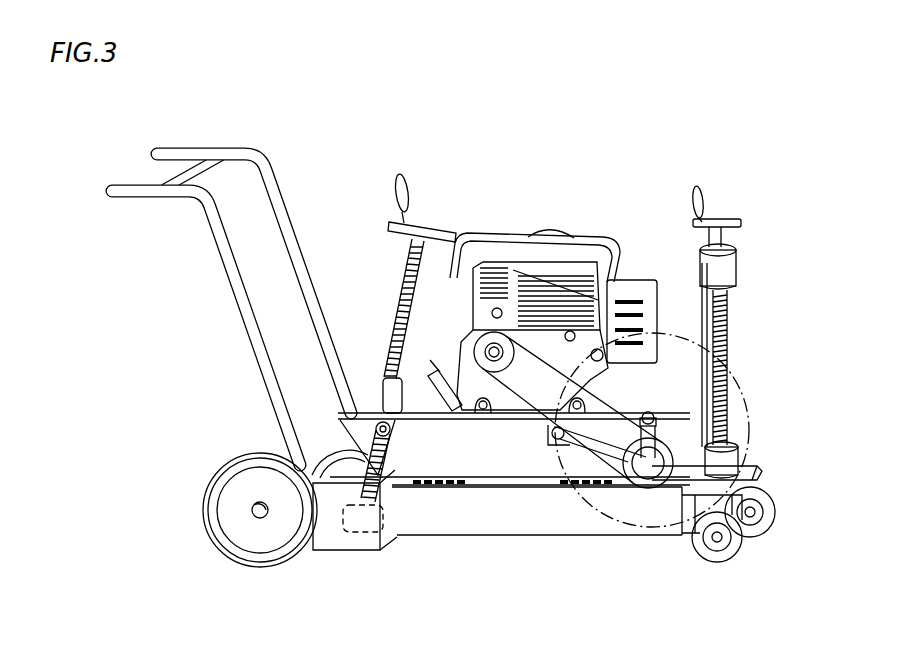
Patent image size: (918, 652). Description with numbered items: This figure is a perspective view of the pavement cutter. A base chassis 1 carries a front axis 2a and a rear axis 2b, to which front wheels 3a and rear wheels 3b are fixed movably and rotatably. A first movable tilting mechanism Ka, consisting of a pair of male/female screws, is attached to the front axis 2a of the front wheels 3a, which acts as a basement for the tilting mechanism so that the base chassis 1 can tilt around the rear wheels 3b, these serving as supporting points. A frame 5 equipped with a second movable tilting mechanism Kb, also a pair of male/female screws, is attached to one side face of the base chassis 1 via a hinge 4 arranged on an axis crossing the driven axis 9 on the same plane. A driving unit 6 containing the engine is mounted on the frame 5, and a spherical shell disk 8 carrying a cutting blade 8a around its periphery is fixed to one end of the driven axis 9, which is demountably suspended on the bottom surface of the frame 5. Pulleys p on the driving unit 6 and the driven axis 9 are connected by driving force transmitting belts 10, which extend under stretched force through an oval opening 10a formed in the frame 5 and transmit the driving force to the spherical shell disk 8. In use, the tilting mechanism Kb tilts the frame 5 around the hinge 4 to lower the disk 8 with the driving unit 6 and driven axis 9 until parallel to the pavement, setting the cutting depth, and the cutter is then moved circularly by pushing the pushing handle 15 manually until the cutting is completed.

The base chassis 1 is at (660, 532).
The front axis 2a is at (757, 523).
The rear axis 2b is at (256, 508).
The front wheels 3a is at (768, 496).
The rear wheels 3b is at (334, 445).
The hinge 4 is at (445, 484).
The frame 5 is at (371, 412).
The driving unit 6 is at (544, 398).
The pulleys p is at (476, 352).
The spherical shell disk 8 is at (698, 430).
The cutting blade 8a is at (742, 386).
The driven axis 9 is at (664, 435).
The driving force transmitting belts 10 is at (520, 420).
The oval opening 10a is at (628, 418).
The pushing handle 15 is at (177, 149).
The first movable tilting mechanism Ka is at (730, 215).
The second movable tilting mechanism Kb is at (440, 215).